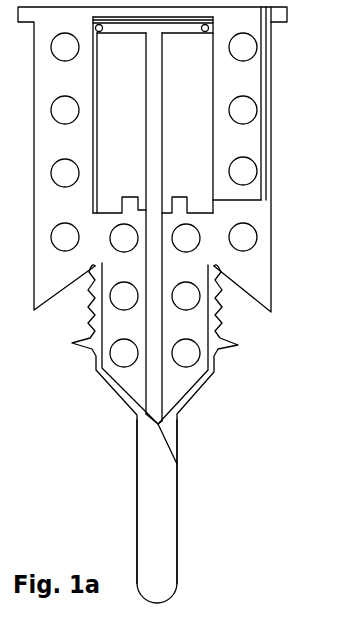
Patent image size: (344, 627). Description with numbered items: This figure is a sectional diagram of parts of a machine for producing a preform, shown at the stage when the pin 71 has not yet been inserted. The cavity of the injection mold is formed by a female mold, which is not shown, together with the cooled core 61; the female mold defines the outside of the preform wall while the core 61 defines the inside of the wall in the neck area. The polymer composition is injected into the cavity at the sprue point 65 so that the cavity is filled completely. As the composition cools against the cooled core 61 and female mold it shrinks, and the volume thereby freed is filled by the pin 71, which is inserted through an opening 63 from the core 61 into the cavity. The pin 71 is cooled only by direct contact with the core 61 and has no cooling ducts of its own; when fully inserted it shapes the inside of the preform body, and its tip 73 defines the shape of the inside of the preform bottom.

The pin 71 is at (153, 345).
The core 61 is at (176, 372).
The opening 63 is at (164, 407).
The tip of the pin 73 is at (178, 465).
The sprue point 65 is at (185, 599).